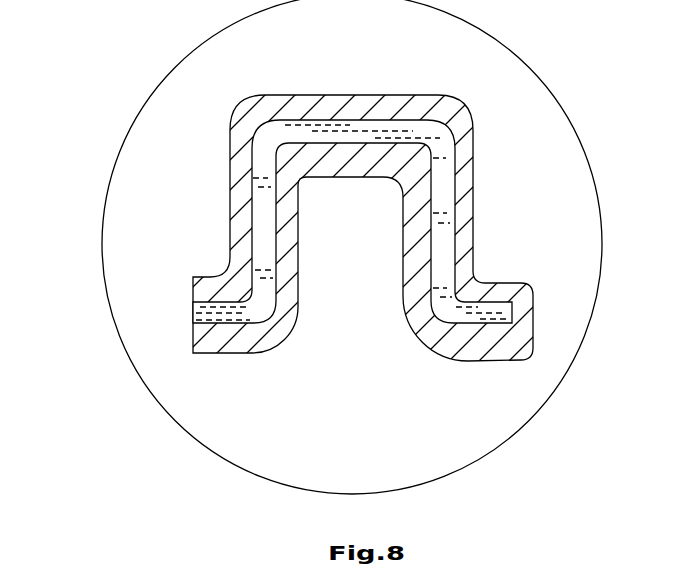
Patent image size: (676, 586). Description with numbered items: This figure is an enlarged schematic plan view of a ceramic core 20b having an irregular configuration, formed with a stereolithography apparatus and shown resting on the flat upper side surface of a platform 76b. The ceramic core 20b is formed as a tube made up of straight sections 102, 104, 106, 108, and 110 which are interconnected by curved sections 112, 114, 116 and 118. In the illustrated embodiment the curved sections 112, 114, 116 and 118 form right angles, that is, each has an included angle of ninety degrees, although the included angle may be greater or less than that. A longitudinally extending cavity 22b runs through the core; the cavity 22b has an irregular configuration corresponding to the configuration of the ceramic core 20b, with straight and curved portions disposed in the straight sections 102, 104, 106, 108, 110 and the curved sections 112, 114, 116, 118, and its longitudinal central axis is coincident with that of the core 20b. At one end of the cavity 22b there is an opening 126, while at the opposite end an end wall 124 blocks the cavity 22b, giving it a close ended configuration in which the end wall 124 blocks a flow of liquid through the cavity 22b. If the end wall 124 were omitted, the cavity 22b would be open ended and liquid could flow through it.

The ceramic core 20b is at (455, 103).
The cavity 22b is at (357, 137).
The platform 76b is at (136, 118).
The straight section 102 is at (228, 343).
The straight section 104 is at (230, 218).
The straight section 106 is at (307, 100).
The straight section 108 is at (465, 197).
The straight section 110 is at (481, 352).
The curved section 112 is at (292, 332).
The curved section 114 is at (248, 112).
The curved section 116 is at (472, 122).
The curved section 118 is at (420, 335).
The end wall 124 is at (533, 316).
The opening 126 is at (195, 316).